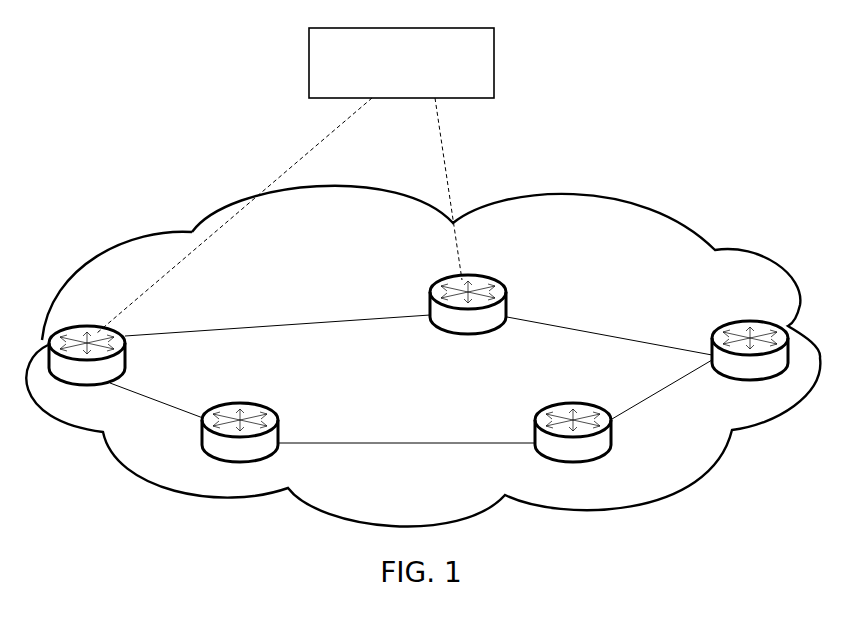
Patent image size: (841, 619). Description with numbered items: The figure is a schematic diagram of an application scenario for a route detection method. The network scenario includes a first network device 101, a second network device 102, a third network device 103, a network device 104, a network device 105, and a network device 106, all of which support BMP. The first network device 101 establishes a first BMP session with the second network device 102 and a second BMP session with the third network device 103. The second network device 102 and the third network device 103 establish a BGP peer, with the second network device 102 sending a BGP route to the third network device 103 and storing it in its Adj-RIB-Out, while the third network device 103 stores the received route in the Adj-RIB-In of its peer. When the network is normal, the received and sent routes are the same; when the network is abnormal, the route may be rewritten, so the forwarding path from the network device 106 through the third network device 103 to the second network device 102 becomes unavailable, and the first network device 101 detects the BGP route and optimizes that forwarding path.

The first network device 101 is at (494, 59).
The second network device 102 is at (117, 336).
The third network device 103 is at (440, 283).
The network device 104 is at (278, 434).
The network device 105 is at (535, 430).
The network device 106 is at (720, 330).